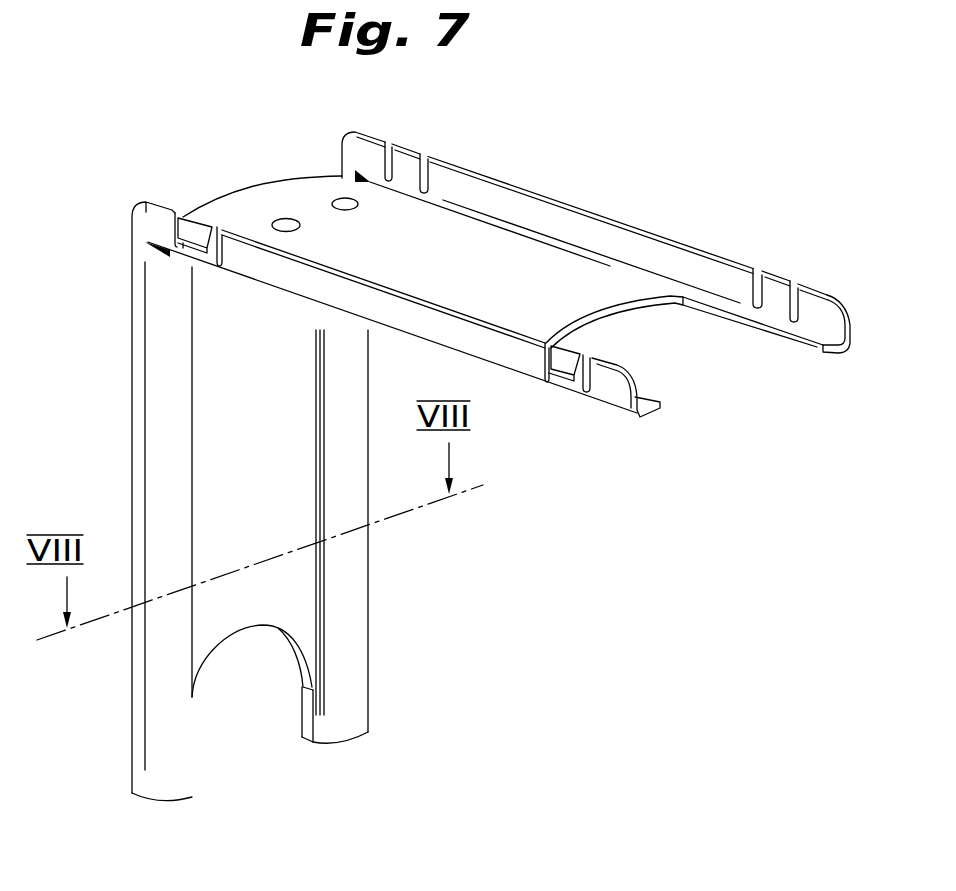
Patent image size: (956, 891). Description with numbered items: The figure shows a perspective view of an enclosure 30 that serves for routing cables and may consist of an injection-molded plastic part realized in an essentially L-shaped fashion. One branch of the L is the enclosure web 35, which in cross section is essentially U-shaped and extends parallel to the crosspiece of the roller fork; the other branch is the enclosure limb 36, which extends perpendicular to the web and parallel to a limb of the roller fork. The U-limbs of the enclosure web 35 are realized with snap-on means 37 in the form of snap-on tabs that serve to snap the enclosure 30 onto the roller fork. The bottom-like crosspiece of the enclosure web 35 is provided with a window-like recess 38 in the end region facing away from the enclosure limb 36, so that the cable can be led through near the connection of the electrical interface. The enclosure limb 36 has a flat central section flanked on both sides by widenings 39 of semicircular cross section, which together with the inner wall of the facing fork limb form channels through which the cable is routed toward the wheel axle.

The enclosure 30 is at (380, 726).
The enclosure web 35 is at (462, 257).
The enclosure limb 36 is at (215, 377).
The snap-on means 37 is at (182, 218).
The window-like recess 38 is at (683, 360).
The widenings 39 is at (353, 655).